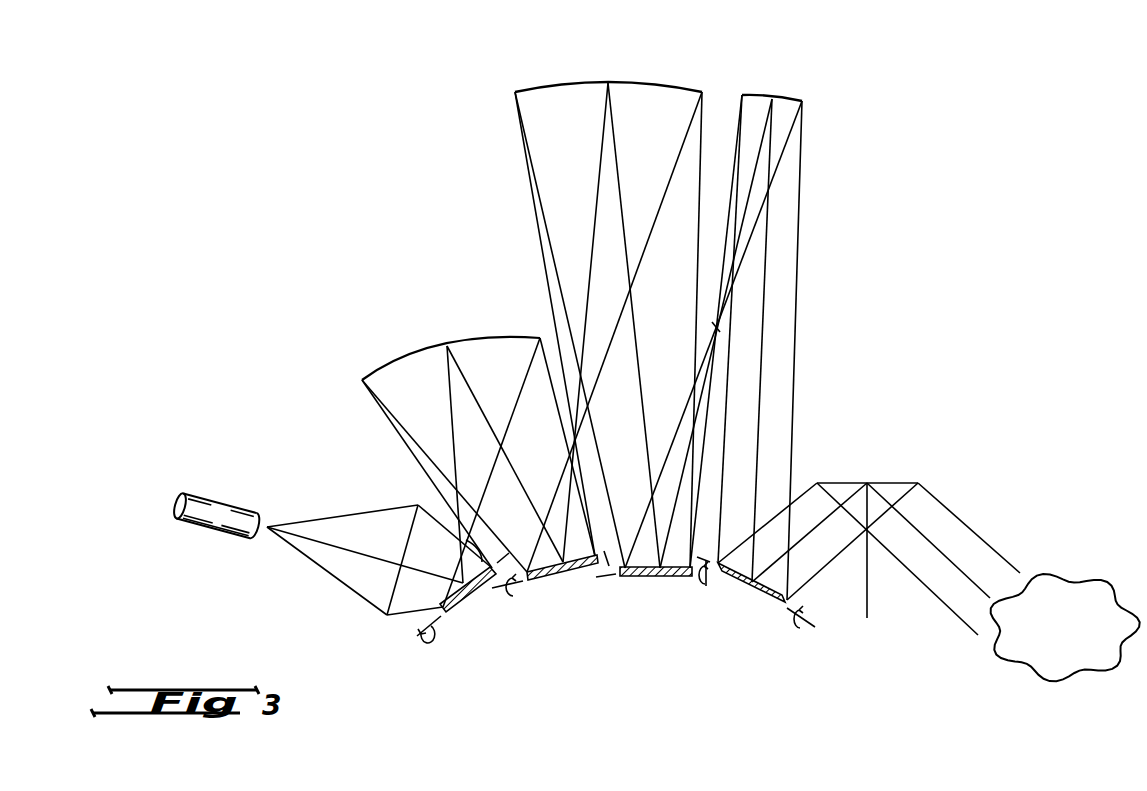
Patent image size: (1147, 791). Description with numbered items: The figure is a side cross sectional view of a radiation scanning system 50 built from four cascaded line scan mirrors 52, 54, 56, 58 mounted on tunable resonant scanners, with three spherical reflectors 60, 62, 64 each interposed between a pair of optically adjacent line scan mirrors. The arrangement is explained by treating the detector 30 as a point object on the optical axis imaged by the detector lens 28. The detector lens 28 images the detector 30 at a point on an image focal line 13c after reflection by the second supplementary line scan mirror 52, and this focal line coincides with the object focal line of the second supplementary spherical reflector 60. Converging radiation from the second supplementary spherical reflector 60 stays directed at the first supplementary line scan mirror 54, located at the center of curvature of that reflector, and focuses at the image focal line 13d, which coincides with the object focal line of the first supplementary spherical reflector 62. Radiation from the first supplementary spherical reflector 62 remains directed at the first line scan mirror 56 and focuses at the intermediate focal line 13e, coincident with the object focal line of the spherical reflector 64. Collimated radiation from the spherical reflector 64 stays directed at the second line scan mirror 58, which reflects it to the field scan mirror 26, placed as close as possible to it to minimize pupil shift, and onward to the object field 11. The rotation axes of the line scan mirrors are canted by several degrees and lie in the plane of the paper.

The object field 11 is at (1092, 577).
The image focal line 13c is at (485, 598).
The image focal line 13d is at (607, 578).
The intermediate focal line 13e is at (722, 327).
The field scan mirror 26 is at (900, 482).
The detector lens 28 is at (393, 590).
The detector 30 is at (220, 500).
The radiation scanning system 50 is at (900, 338).
The second supplementary line scan mirror 52 is at (462, 604).
The first supplementary line scan mirror 54 is at (567, 580).
The first line scan mirror 56 is at (665, 578).
The second line scan mirror 58 is at (758, 597).
The second supplementary spherical reflector 60 is at (457, 340).
The first supplementary spherical reflector 62 is at (570, 83).
The spherical reflector 64 is at (755, 95).